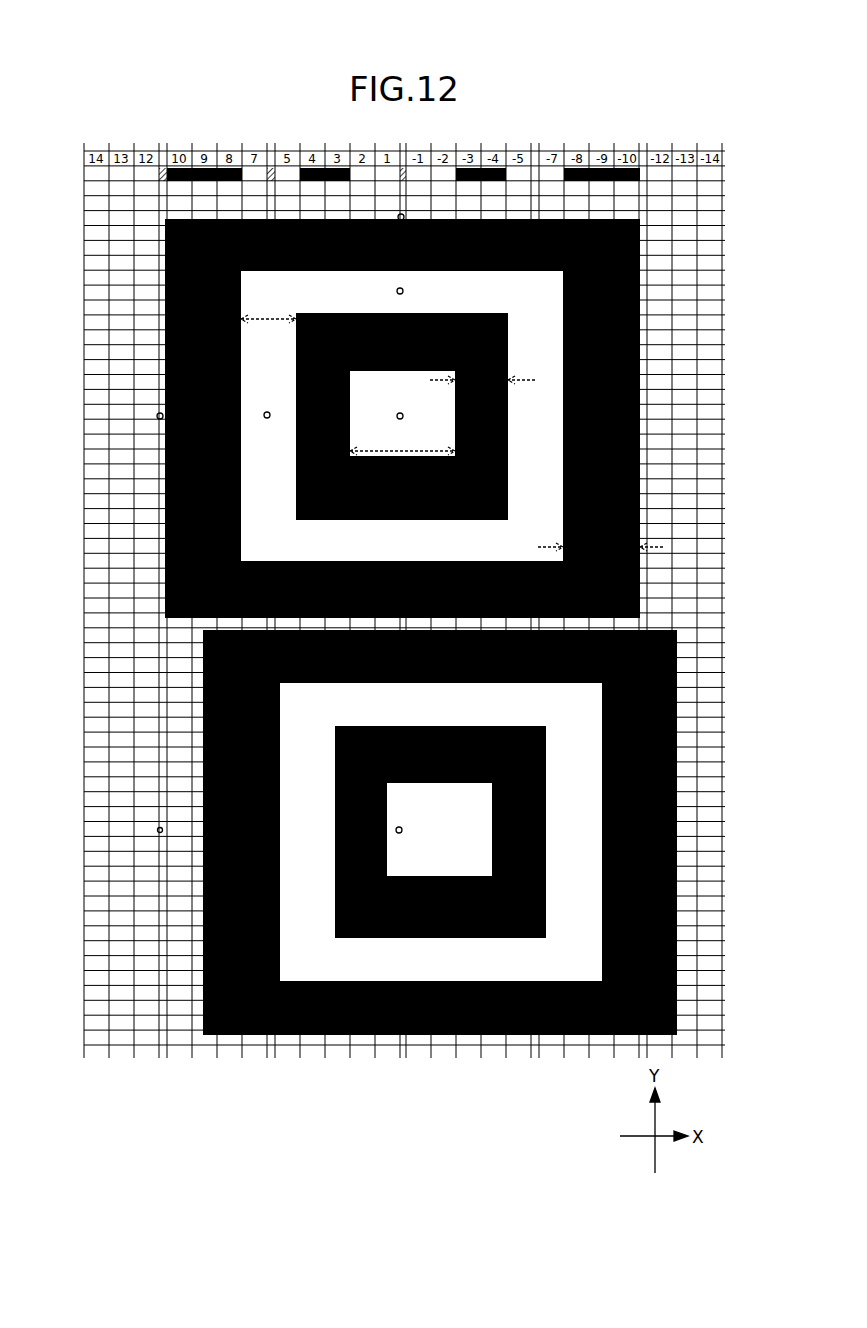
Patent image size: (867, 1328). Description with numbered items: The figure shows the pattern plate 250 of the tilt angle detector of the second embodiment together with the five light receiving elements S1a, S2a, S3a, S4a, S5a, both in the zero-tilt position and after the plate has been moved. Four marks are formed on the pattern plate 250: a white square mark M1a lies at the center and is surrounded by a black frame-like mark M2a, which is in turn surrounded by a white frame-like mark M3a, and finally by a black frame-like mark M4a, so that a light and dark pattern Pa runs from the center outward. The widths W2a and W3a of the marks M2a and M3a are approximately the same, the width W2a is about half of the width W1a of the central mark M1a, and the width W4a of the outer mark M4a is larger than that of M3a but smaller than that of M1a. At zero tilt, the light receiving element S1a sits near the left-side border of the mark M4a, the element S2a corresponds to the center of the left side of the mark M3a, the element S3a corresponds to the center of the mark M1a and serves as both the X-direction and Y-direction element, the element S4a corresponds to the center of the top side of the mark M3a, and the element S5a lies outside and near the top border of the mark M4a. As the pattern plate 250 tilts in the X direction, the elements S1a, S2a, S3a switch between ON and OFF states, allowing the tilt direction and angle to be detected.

The pattern plate 250 is at (634, 298).
The light and dark pattern Pa is at (634, 251).
The white square mark M1a is at (335, 383).
The black frame-like mark M2a is at (290, 468).
The white frame-like mark M3a is at (530, 457).
The black frame-like mark M4a is at (632, 510).
The light receiving element S1a is at (155, 511).
The light receiving element S2a is at (278, 504).
The light receiving element S3a is at (399, 504).
The light receiving element S4a is at (382, 297).
The light receiving element S5a is at (383, 209).
The width of mark M1a W1a is at (402, 443).
The width of mark M2a W2a is at (493, 372).
The width of mark M3a W3a is at (268, 307).
The width of mark M4a W4a is at (591, 539).